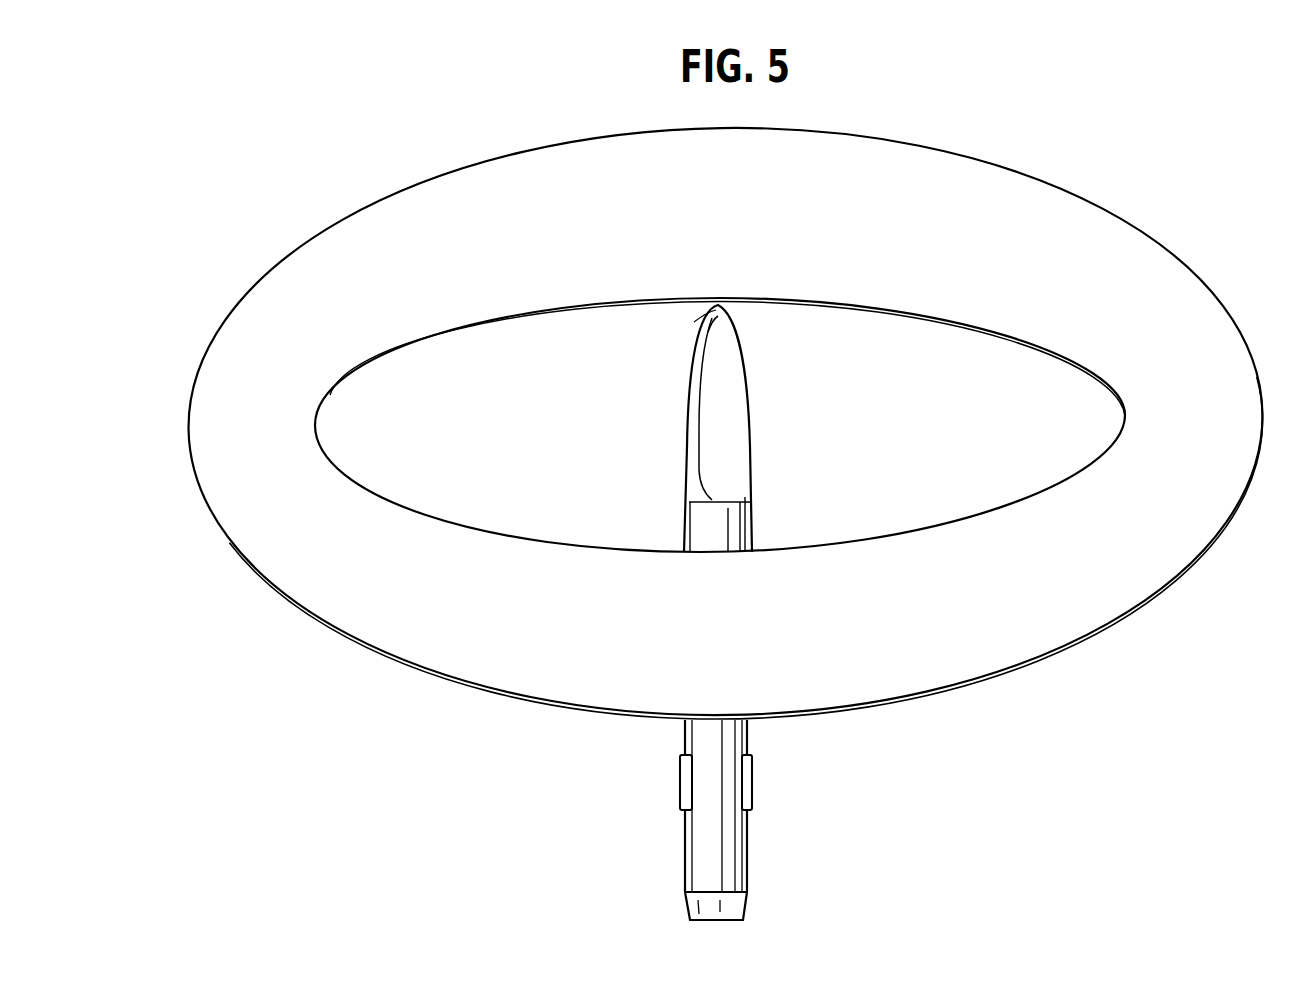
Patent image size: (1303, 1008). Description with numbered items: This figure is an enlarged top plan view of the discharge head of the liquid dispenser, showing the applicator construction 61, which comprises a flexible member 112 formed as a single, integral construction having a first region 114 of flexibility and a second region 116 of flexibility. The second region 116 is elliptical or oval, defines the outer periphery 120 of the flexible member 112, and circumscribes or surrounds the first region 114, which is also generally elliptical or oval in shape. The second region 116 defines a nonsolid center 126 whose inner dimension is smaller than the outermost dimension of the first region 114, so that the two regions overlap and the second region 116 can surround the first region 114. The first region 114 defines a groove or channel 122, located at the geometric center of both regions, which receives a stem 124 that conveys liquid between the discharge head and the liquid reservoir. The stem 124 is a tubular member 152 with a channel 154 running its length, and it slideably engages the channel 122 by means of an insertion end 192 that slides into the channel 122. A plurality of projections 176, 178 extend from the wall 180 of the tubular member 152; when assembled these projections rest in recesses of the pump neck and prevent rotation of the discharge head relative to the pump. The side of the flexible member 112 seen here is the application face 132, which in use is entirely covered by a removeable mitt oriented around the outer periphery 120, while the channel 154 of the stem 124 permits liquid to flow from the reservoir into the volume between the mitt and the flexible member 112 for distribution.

The applicator construction 61 is at (285, 202).
The flexible member 112 is at (1138, 178).
The first region 114 is at (911, 435).
The second region 116 is at (1107, 566).
The outer periphery 120 is at (1190, 262).
The channel 122 is at (755, 448).
The stem 124 is at (685, 862).
The nonsolid center 126 is at (943, 525).
The application face 132 is at (528, 134).
The tubular member 152 is at (746, 733).
The channel 154 is at (703, 497).
The projection 176 is at (680, 786).
The projection 178 is at (752, 788).
The wall 180 is at (746, 882).
The insertion end 192 is at (745, 498).